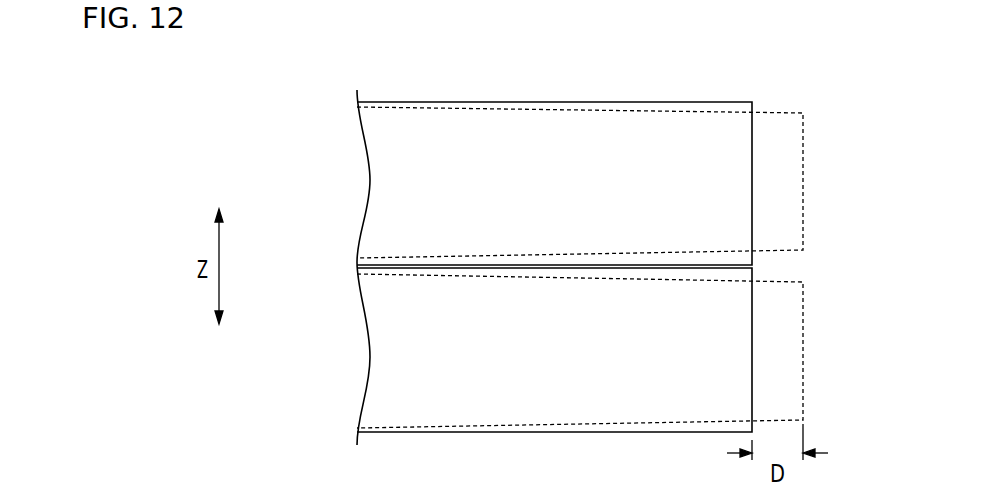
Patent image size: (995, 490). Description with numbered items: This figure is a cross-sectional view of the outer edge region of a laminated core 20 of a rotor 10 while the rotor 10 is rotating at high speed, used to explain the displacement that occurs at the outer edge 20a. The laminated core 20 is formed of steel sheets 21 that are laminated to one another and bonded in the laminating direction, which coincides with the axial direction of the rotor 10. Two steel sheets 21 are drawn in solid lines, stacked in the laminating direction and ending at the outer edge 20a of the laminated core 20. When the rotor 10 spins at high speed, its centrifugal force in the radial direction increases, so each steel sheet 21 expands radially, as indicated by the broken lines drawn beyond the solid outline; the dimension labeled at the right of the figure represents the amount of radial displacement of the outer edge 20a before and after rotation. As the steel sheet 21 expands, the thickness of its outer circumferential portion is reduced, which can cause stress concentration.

The rotor 10 is at (825, 118).
The laminated core 20 is at (518, 96).
The outer edge of the laminated core 20a is at (752, 109).
The steel sheet 21 is at (628, 137).